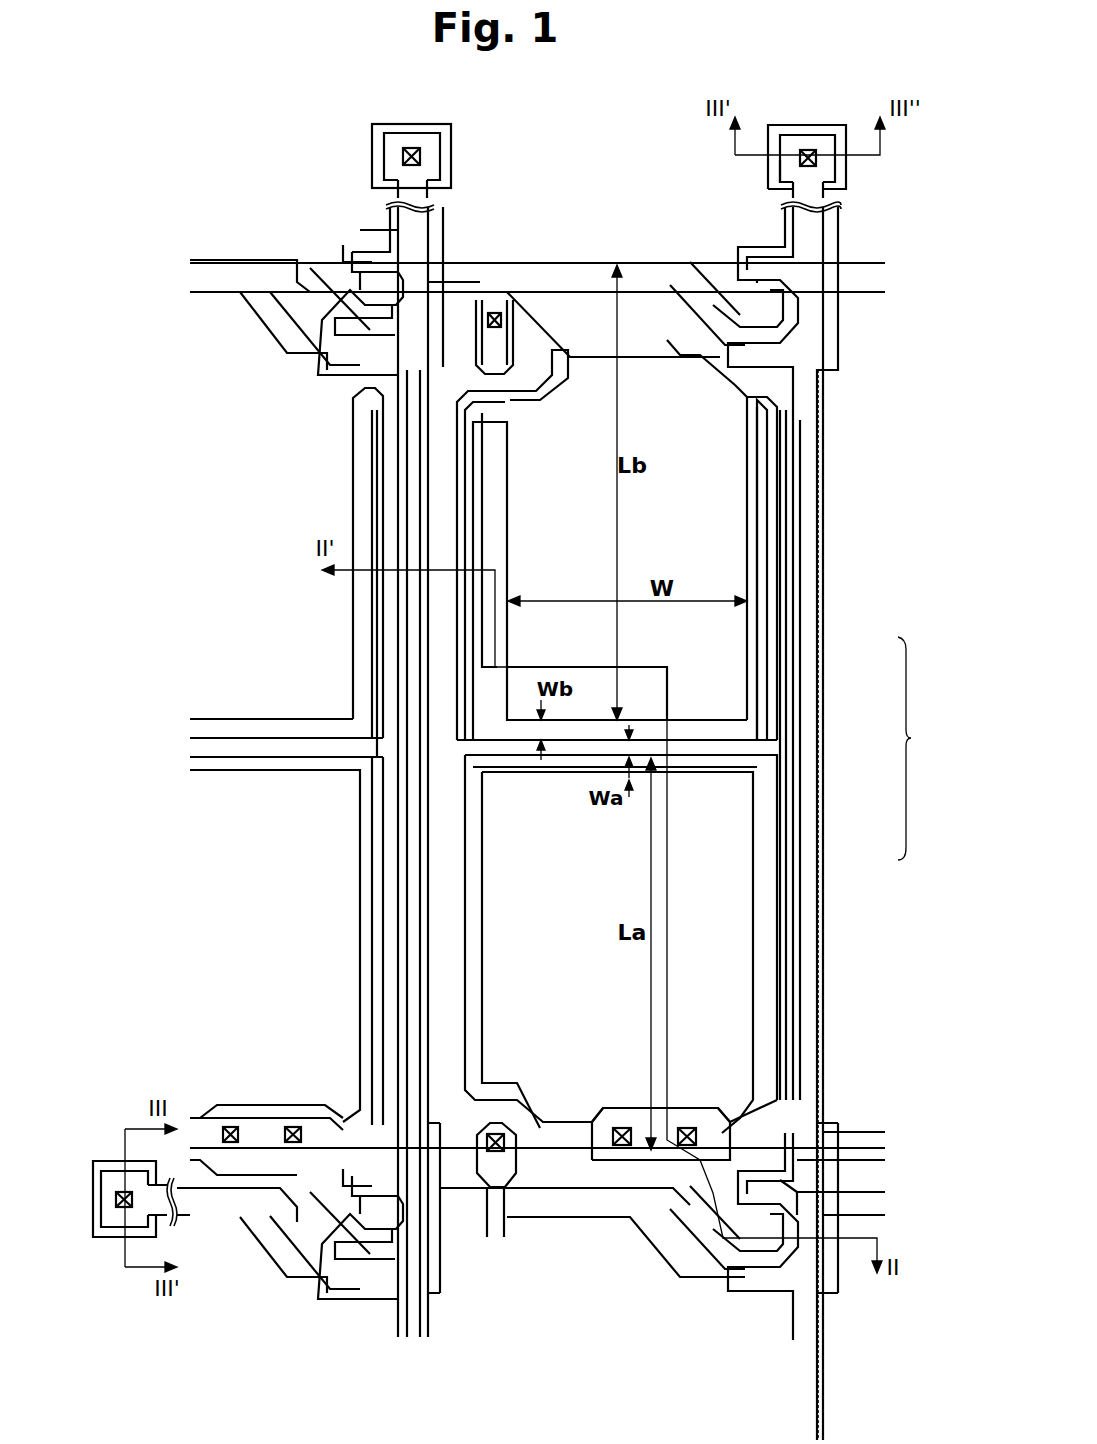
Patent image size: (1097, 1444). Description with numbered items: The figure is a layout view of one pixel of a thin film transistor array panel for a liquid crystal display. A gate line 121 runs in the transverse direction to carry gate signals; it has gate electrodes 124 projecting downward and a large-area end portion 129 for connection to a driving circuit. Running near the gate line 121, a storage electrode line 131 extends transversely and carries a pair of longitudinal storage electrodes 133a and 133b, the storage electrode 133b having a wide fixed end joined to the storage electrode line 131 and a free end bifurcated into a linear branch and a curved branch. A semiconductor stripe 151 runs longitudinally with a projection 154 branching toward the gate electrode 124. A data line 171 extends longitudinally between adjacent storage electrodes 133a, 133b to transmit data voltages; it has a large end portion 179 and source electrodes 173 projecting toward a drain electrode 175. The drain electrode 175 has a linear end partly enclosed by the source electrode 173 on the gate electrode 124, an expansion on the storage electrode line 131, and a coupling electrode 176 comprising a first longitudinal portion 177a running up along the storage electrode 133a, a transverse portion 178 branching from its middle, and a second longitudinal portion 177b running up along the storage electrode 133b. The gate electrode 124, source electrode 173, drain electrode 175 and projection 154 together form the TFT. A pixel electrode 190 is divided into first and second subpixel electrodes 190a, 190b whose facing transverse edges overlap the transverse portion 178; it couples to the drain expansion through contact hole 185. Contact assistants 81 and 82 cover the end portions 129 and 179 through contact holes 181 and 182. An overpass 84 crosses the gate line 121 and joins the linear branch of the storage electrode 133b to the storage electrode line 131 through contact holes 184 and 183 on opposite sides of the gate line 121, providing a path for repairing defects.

The contact assistant 81 is at (97, 1238).
The contact assistant 82 is at (845, 186).
The overpass 84 is at (513, 345).
The gate line 121 is at (578, 1217).
The gate electrode 124 is at (827, 1243).
The end portion 129 is at (110, 1170).
The storage electrode line 131 is at (853, 1132).
The storage electrode 133a is at (767, 489).
The storage electrode 133b is at (477, 489).
The semiconductor stripe 151 is at (818, 608).
The projection 154 is at (718, 1295).
The data line 171 is at (823, 575).
The source electrode 173 is at (762, 1291).
The drain electrode 175 is at (718, 1240).
The coupling electrode 176 is at (752, 840).
The first longitudinal portion 177a is at (745, 547).
The second longitudinal portion 177b is at (497, 551).
The transverse portion 178 is at (697, 720).
The end portion 179 is at (780, 170).
The contact hole 181 is at (113, 1198).
The contact hole 182 is at (808, 148).
The contact hole 183 is at (497, 1125).
The contact hole 184 is at (501, 320).
The contact hole 185 is at (622, 1127).
The pixel electrode 190 is at (927, 748).
The first subpixel electrode 190a is at (780, 828).
The second subpixel electrode 190b is at (780, 636).